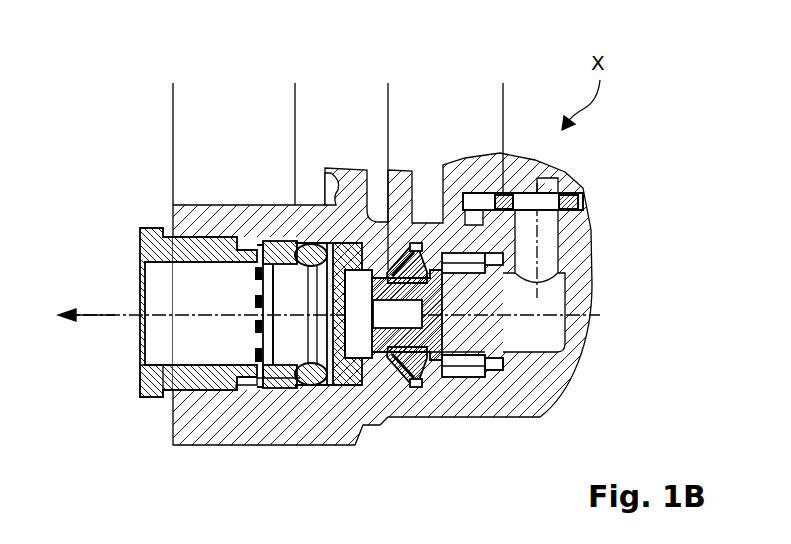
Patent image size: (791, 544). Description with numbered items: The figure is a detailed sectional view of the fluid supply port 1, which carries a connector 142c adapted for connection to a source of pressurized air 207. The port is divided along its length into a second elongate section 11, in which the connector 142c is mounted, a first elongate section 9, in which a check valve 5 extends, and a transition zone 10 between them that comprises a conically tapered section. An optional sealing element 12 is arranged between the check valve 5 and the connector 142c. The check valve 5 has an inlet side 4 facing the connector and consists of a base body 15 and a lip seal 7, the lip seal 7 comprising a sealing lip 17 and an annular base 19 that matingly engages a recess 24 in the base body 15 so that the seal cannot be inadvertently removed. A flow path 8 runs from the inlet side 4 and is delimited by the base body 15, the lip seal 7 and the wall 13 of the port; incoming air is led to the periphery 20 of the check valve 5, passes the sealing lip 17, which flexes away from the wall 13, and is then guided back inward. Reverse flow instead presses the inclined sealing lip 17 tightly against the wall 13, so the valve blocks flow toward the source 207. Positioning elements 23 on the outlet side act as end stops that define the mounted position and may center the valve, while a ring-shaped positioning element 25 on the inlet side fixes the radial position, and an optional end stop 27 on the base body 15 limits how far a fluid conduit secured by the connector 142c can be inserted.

The fluid supply port 1 is at (527, 332).
The inlet side 4 is at (173, 328).
The check valve 5 is at (443, 382).
The lip seal 7 is at (396, 390).
The flow path 8 is at (333, 245).
The first elongate section 9 is at (503, 80).
The transition zone 10 is at (388, 80).
The second elongate section 11 is at (295, 80).
The sealing element 12 is at (313, 388).
The wall 13 is at (468, 378).
The base body 15 is at (213, 432).
The sealing lip 17 is at (455, 258).
The annular base 19 is at (364, 392).
The periphery 20 is at (510, 200).
The positioning elements 23 is at (495, 370).
The recess 24 is at (420, 386).
The positioning element 25 is at (330, 392).
The end stop 27 is at (345, 270).
The connector 142c is at (147, 385).
The source of pressurized air 207 is at (95, 311).